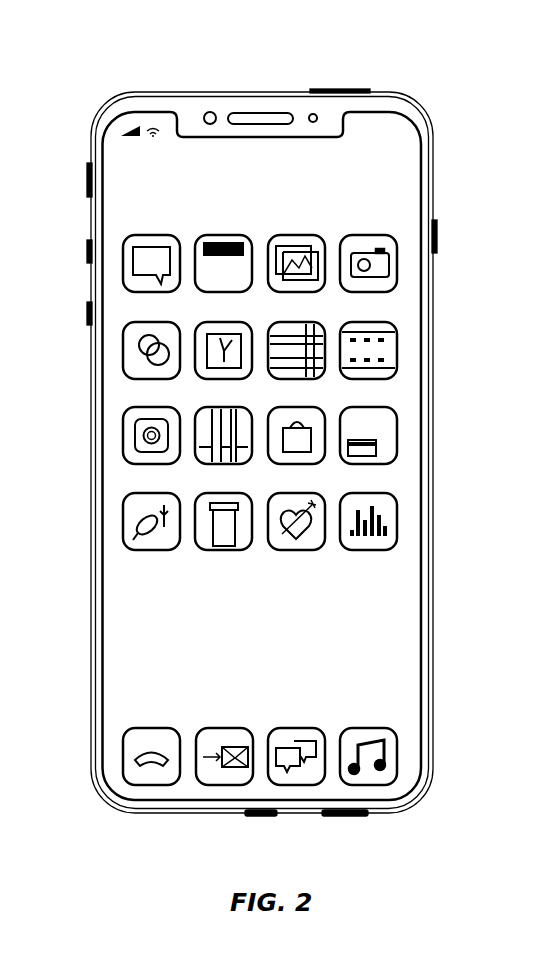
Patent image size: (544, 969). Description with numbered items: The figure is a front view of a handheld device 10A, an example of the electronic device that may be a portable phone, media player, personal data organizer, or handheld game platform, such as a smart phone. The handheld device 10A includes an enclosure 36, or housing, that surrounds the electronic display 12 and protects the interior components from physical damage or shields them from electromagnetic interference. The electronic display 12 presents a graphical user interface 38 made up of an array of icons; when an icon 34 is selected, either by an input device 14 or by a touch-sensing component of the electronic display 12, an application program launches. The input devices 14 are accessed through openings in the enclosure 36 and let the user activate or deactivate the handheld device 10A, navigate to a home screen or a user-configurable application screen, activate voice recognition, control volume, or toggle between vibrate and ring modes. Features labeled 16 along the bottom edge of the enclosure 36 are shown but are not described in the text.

The handheld device 10A is at (80, 74).
The electronic display 12 is at (433, 493).
The input devices 14 is at (88, 186).
The ports 16 is at (165, 816).
The icon 34 is at (296, 553).
The enclosure 36 is at (434, 161).
The graphical user interface 38 is at (393, 398).